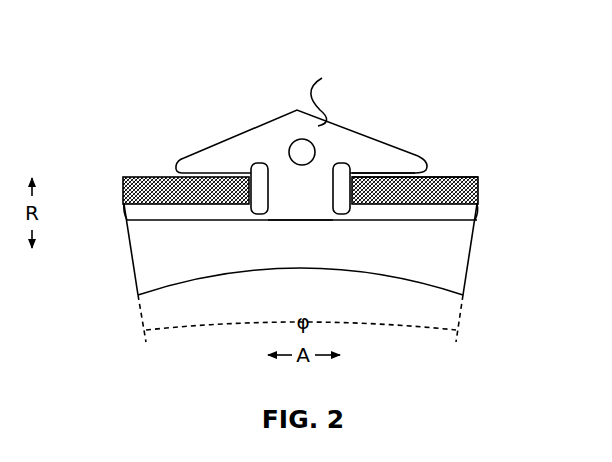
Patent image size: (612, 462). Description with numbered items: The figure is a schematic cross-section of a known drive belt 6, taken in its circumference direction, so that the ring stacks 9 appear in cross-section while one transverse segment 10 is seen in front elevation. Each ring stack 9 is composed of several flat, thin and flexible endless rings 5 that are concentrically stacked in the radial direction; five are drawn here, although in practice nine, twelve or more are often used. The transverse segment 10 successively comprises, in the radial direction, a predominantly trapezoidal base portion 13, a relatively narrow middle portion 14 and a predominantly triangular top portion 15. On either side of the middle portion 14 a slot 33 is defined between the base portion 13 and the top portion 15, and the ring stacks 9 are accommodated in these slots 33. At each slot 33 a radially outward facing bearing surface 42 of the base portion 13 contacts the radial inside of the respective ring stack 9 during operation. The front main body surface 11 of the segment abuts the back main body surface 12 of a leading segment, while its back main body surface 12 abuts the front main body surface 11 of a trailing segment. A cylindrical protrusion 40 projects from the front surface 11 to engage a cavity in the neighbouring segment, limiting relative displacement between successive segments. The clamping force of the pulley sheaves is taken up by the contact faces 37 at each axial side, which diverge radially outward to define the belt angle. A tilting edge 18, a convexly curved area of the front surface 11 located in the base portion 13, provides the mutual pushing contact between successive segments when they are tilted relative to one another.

The endless ring 5 is at (480, 177).
The drive belt 6 is at (468, 97).
The ring stack 9 is at (131, 165).
The transverse segment 10 is at (331, 95).
The front main body surface 11 is at (195, 157).
The back main body surface 12 is at (382, 138).
The base portion 13 is at (290, 255).
The middle portion 14 is at (290, 202).
The top portion 15 is at (366, 167).
The tilting edge 18 is at (270, 221).
The slot 33 is at (259, 186).
The contact face 37 is at (132, 279).
The protrusion 40 is at (304, 142).
The bearing surface 42 is at (147, 208).